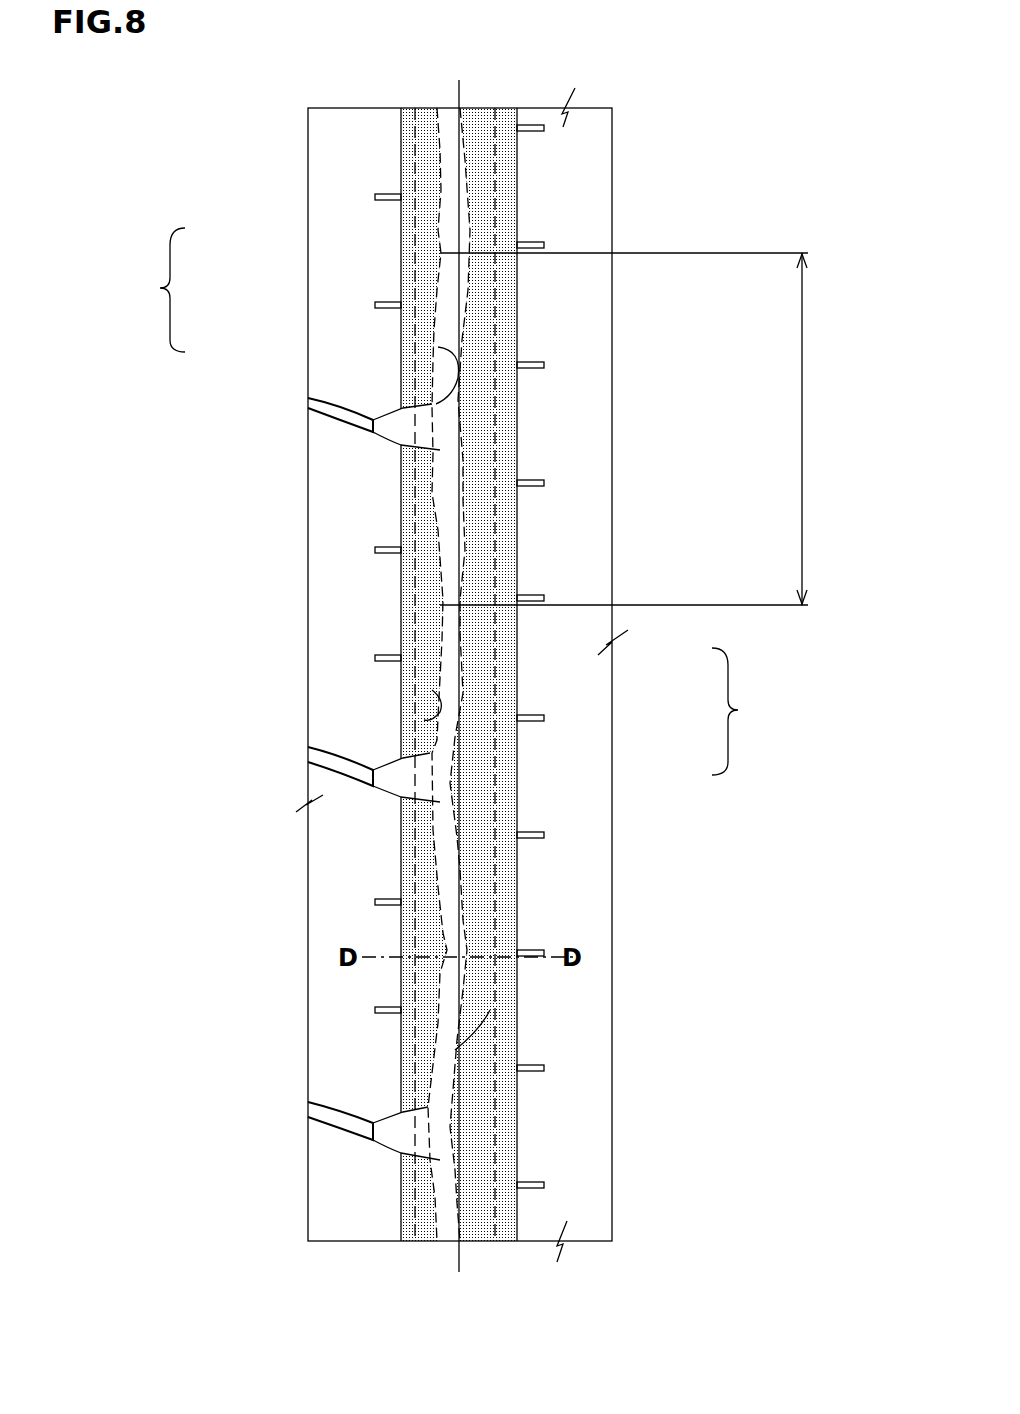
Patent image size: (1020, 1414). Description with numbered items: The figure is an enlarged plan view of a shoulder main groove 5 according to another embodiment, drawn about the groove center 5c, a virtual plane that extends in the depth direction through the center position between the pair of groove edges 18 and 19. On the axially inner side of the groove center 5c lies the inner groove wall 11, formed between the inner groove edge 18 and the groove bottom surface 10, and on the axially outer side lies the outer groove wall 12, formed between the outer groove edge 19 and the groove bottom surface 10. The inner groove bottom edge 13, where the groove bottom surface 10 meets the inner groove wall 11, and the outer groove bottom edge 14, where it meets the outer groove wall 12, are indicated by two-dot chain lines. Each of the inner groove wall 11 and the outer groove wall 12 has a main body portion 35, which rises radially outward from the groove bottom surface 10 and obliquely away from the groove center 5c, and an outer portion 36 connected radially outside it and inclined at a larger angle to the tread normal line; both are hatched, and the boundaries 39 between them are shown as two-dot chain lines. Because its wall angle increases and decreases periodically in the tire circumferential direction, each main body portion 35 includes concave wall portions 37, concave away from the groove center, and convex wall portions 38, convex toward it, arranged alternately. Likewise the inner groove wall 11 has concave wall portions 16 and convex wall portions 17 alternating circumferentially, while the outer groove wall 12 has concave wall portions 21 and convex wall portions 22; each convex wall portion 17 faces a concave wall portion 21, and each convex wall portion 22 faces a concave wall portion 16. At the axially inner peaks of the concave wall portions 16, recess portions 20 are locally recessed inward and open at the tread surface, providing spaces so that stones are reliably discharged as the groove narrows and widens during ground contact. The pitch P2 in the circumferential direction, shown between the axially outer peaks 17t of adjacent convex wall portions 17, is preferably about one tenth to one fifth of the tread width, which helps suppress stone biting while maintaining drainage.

The shoulder main groove 5 is at (452, 178).
The groove center 5c is at (460, 98).
The groove bottom surface 10 is at (445, 1045).
The inner groove wall 11 is at (153, 290).
The outer groove wall 12 is at (744, 711).
The inner groove bottom edge 13 is at (413, 723).
The outer groove bottom edge 14 is at (462, 343).
The concave wall portion 16 is at (418, 428).
The convex wall portion 17 is at (458, 225).
The axially outer peak 17t is at (441, 254).
The groove edge 18 is at (395, 1000).
The groove edge 19 is at (517, 1130).
The recess portion 20 is at (375, 442).
The concave wall portion 21 is at (462, 608).
The convex wall portion 22 is at (450, 780).
The main body portion 35 is at (427, 622).
The outer portion 36 is at (432, 690).
The concave wall portion 37 is at (470, 870).
The convex wall portion 38 is at (447, 430).
The boundary 39 is at (416, 185).
The pitch P2 is at (800, 429).